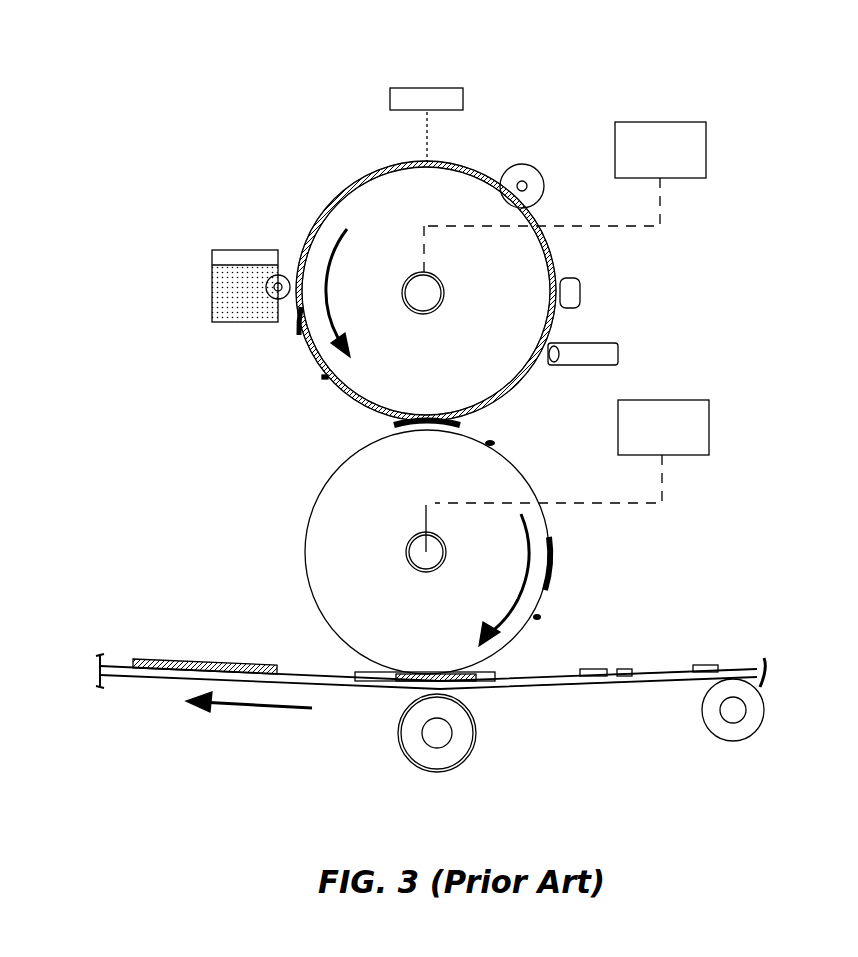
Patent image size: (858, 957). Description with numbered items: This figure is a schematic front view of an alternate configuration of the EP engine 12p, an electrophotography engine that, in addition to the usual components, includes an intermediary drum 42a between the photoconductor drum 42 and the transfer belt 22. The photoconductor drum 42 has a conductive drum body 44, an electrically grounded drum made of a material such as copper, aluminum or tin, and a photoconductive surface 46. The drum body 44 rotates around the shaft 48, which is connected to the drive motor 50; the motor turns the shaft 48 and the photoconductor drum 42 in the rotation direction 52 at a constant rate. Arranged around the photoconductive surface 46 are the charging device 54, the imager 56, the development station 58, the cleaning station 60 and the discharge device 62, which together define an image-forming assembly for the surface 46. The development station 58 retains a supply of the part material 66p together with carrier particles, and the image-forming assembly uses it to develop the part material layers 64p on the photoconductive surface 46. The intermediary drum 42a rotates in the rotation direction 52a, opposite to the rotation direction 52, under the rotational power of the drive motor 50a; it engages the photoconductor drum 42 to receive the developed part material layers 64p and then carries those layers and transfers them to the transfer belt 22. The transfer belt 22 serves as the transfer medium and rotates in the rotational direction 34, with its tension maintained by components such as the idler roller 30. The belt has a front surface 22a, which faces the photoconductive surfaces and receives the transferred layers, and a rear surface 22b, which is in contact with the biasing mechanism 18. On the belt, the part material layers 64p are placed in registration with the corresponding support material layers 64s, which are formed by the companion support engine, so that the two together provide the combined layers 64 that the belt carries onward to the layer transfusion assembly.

The EP engine 12p is at (155, 76).
The biasing mechanism 18 is at (457, 742).
The transfer belt 22 is at (112, 730).
The front surface 22a is at (750, 666).
The rear surface 22b is at (614, 690).
The idler roller 30 is at (737, 733).
The rotational direction 34 is at (248, 710).
The photoconductor drum 42 is at (296, 195).
The intermediary drum 42a is at (290, 491).
The conductive drum body 44 is at (445, 376).
The photoconductive surface 46 is at (360, 172).
The shaft 48 is at (438, 292).
The drive motor 50 is at (693, 122).
The drive motor 50a is at (700, 400).
The rotation direction 52 is at (326, 258).
The rotation direction 52a is at (524, 520).
The charging device 54 is at (518, 163).
The imager 56 is at (448, 88).
The development station 58 is at (198, 245).
The cleaning station 60 is at (605, 343).
The discharge device 62 is at (578, 280).
The combined layer 64 is at (197, 642).
The part material layer 64p is at (284, 349).
The support material layer 64s is at (363, 700).
The part material 66p is at (230, 280).